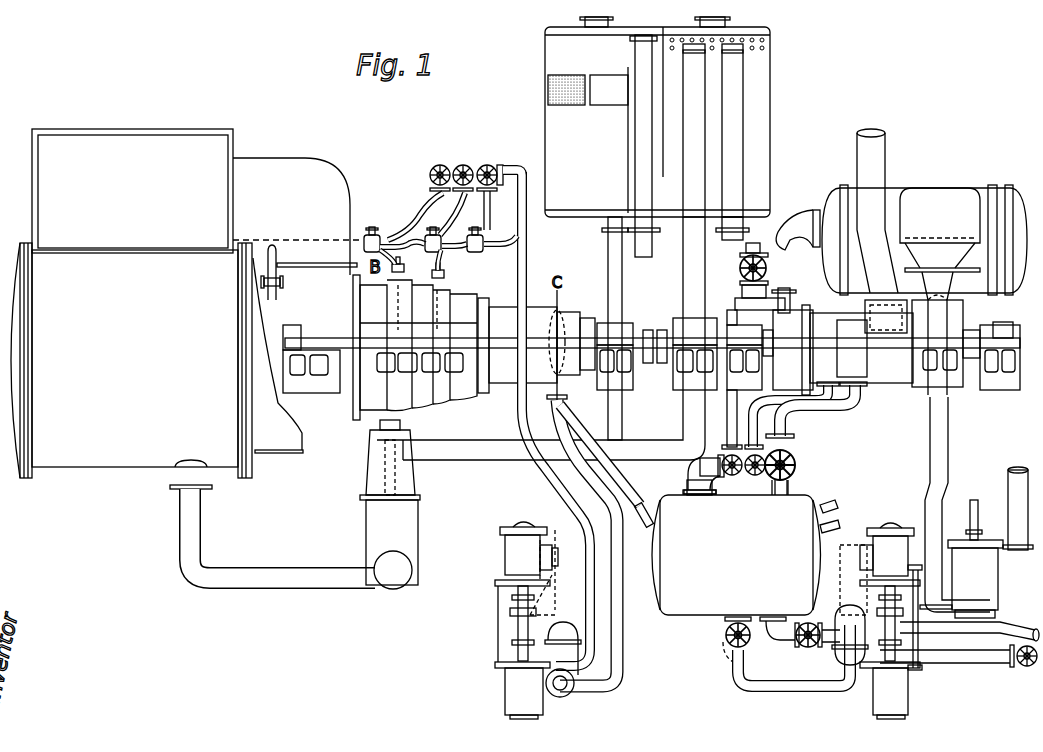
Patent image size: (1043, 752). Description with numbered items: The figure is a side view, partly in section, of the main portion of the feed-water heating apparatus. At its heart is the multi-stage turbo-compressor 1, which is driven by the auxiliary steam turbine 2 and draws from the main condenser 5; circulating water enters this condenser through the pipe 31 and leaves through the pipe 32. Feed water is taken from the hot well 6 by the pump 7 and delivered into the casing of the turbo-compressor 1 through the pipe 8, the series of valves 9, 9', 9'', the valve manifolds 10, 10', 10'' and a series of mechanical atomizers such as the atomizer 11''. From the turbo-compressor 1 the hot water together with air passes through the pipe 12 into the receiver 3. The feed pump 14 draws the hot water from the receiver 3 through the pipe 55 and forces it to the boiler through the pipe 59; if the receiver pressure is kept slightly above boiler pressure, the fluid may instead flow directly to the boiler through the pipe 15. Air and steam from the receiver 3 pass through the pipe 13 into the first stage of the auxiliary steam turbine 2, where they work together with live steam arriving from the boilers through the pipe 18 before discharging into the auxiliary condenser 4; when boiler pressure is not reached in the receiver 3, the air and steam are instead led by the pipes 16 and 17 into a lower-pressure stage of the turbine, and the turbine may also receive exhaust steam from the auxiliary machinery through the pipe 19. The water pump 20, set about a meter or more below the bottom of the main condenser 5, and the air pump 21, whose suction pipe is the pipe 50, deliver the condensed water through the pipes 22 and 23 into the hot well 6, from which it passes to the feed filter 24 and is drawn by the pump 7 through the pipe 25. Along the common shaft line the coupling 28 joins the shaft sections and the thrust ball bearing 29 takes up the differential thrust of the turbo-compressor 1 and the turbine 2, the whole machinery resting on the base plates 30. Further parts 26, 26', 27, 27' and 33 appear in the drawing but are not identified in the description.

The multi-stage turbo-compressor 1 is at (474, 347).
The auxiliary steam turbine 2 is at (788, 350).
The receiver 3 is at (759, 572).
The auxiliary condenser 4 is at (901, 290).
The main condenser 5 is at (193, 353).
The hot well 6 is at (657, 228).
The pump 7 is at (529, 620).
The pipe 8 is at (587, 543).
The valve 9 is at (533, 404).
The valve 9' is at (456, 189).
The valve 9'' is at (419, 191).
The valve manifold 10 is at (490, 231).
The valve manifold 10' is at (445, 238).
The valve manifold 10'' is at (394, 227).
The mechanical atomizer 11'' is at (289, 282).
The pipe 12 is at (610, 497).
The pipe 13 is at (740, 328).
The feed pump 14 is at (883, 621).
The pipe 15 is at (768, 632).
The pipe 16 is at (760, 410).
The pipe 17 is at (816, 438).
The pipe 18 is at (770, 294).
The pipe 19 is at (882, 153).
The water pump 20 is at (410, 543).
The air pump 21 is at (993, 587).
The pipe 22 is at (450, 458).
The pipe 23 is at (740, 108).
The feed filter 24 is at (546, 90).
The pipe 25 is at (617, 684).
The bearing 26 is at (288, 328).
The bearing 26' is at (607, 319).
The valve 27 is at (746, 276).
The coupling 27' is at (1016, 311).
The coupling 28 is at (652, 330).
The thrust ball bearing 29 is at (694, 318).
The base plates 30 is at (305, 385).
The pipe 31 is at (277, 452).
The pipe 32 is at (265, 262).
The housing 33 is at (297, 304).
The suction pipe 50 is at (948, 444).
The pipe 55 is at (773, 680).
The pipe 59 is at (956, 660).